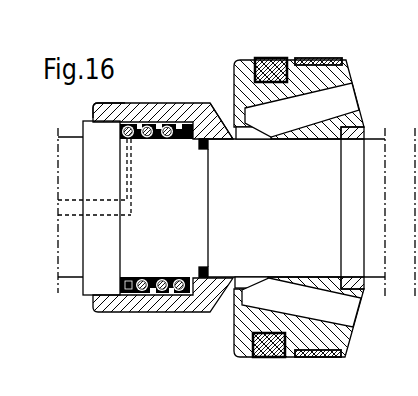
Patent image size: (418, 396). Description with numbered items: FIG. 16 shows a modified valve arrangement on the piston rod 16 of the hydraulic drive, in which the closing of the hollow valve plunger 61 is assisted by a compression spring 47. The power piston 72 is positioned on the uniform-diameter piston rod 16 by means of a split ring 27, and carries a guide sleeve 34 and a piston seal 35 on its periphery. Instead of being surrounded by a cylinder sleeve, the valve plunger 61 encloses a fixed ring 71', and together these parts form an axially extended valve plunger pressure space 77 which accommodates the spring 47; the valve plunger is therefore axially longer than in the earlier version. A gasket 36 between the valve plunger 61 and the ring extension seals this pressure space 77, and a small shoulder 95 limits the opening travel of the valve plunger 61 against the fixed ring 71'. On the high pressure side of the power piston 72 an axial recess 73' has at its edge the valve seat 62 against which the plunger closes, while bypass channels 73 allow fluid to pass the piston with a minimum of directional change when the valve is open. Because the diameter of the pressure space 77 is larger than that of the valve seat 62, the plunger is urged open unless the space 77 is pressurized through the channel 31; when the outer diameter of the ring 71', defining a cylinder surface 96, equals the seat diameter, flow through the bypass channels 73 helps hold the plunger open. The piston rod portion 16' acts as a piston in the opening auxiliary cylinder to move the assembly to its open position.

The piston rod 16 is at (222, 245).
The piston rod portion 16' is at (385, 187).
The split ring 27 is at (354, 158).
The channel 31 is at (100, 211).
The guide sleeve 34 is at (327, 58).
The piston seal 35 is at (281, 57).
The gasket 36 is at (210, 143).
The compression spring 47 is at (152, 125).
The hollow valve plunger 61 is at (207, 297).
The valve seat 62 is at (231, 127).
The fixed ring 71' is at (101, 242).
The power piston 72 is at (313, 78).
The bypass channels 73 is at (324, 100).
The axial recess 73' is at (301, 283).
The valve plunger pressure space 77 is at (170, 285).
The small shoulder 95 is at (138, 136).
The cylinder surface 96 is at (104, 104).